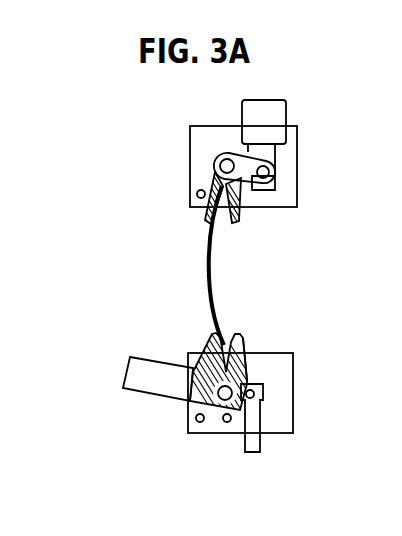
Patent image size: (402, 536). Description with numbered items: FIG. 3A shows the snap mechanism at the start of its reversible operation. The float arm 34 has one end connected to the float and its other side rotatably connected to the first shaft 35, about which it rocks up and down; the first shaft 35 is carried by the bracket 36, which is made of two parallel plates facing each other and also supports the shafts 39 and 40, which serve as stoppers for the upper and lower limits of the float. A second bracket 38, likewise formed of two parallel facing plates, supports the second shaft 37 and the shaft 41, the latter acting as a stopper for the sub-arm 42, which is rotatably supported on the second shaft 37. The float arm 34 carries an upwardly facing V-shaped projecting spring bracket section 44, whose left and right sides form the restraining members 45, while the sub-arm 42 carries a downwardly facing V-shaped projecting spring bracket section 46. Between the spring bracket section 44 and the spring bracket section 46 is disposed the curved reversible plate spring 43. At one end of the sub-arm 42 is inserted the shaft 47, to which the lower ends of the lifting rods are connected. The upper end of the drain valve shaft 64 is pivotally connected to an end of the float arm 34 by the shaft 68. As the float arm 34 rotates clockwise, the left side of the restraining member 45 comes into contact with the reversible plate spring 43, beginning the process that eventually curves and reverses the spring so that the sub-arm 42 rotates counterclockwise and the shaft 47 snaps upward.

The float arm 34 is at (128, 378).
The first shaft 35 is at (193, 407).
The bracket 36 is at (283, 422).
The second shaft 37 is at (213, 165).
The bracket 38 is at (203, 142).
The shaft 39 is at (198, 430).
The shaft 40 is at (228, 430).
The shaft 41 is at (190, 193).
The sub-arm 42 is at (268, 152).
The reversible plate spring 43 is at (203, 273).
The spring bracket section 44 is at (248, 366).
The restraining members 45 is at (210, 345).
The spring bracket section 46 is at (236, 181).
The shaft 47 is at (268, 173).
The drain valve shaft 64 is at (261, 450).
The shaft 68 is at (263, 400).